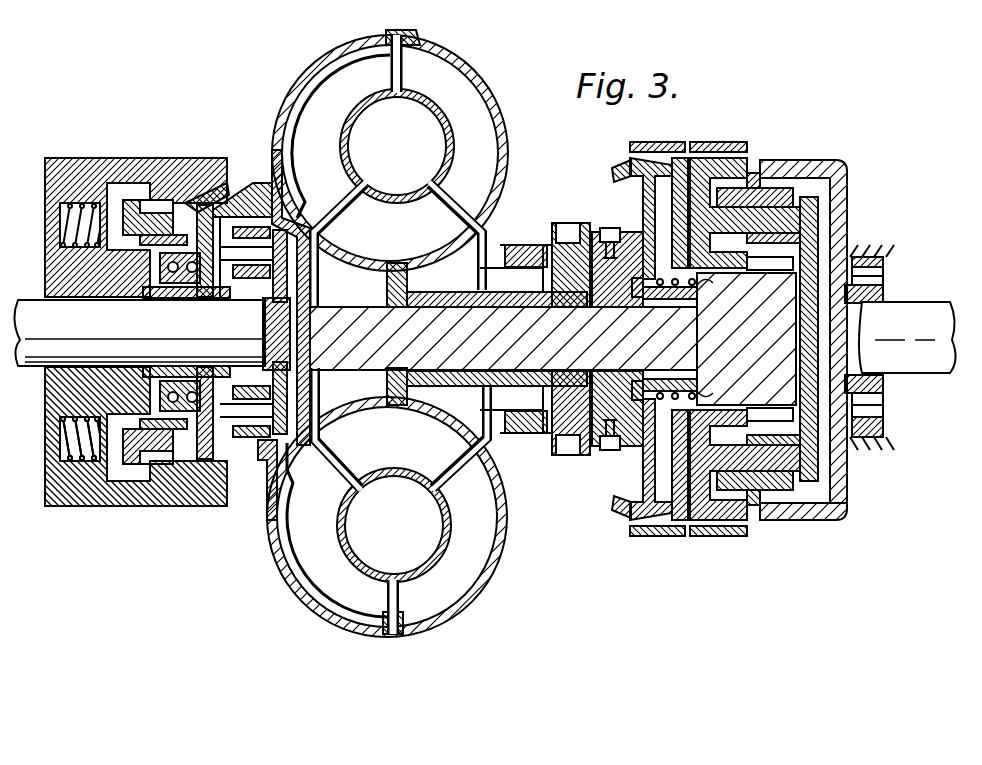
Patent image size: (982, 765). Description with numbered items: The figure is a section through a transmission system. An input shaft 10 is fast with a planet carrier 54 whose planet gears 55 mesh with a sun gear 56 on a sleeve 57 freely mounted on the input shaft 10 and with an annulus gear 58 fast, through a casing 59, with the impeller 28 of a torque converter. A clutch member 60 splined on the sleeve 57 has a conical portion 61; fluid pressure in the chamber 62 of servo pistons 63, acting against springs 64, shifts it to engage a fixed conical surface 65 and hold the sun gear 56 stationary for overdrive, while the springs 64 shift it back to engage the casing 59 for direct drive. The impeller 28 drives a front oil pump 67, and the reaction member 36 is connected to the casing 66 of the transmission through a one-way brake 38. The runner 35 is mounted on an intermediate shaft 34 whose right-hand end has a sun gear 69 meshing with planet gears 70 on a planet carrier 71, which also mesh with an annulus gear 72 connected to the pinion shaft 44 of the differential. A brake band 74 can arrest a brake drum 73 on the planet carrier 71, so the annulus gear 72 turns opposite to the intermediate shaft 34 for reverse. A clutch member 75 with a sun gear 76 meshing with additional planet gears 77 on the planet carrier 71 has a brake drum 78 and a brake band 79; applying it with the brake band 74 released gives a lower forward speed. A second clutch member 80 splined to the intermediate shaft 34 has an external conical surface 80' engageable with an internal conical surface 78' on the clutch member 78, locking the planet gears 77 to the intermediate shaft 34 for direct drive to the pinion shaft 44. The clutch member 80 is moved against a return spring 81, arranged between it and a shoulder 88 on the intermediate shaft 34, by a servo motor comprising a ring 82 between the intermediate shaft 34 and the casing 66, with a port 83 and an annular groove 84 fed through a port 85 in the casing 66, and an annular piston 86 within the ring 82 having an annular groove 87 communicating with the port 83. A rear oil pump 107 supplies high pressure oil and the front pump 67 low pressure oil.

The input shaft 10 is at (135, 347).
The impeller 28 is at (401, 352).
The intermediate shaft 34 is at (553, 339).
The runner 35 is at (398, 172).
The reaction member 36 is at (390, 311).
The one-way brake 38 is at (563, 246).
The pinion shaft 44 is at (907, 325).
The planet carrier 54 is at (293, 356).
The planet gears 55 is at (228, 214).
The sun gear 56 is at (246, 411).
The sleeve 57 is at (177, 390).
The annulus gear 58 is at (267, 403).
The casing 59 is at (383, 333).
The clutch member 60 is at (223, 413).
The conical portion 61 is at (208, 214).
The chamber 62 is at (159, 190).
The fluid pressure servo pistons 63 is at (152, 474).
The springs 64 is at (116, 332).
The fixed conical surface 65 is at (136, 448).
The casing 66 is at (516, 247).
The oil pump 67 is at (497, 322).
The sun gear 69 is at (814, 318).
The planet gears 70 is at (803, 518).
The planet carrier 71 is at (841, 333).
The annulus gear 72 is at (756, 319).
The brake drum 73 is at (745, 192).
The brake band 74 is at (718, 551).
The clutch member 75 is at (609, 520).
The sun gear 76 is at (745, 464).
The planet gears 77 is at (803, 318).
The brake drum 78 is at (657, 133).
The internal conical surface 78' is at (718, 133).
The brake band 79 is at (654, 551).
The second clutch member 80 is at (632, 338).
The external conical surface 80' is at (607, 155).
The return spring 81 is at (664, 339).
The ring 82 is at (569, 428).
The port 83 is at (608, 246).
The annular groove 84 is at (616, 221).
The port 85 is at (618, 457).
The annular piston 86 is at (516, 434).
The annular groove 87 is at (609, 434).
The shoulder 88 is at (717, 337).
The rear oil pump 107 is at (890, 347).